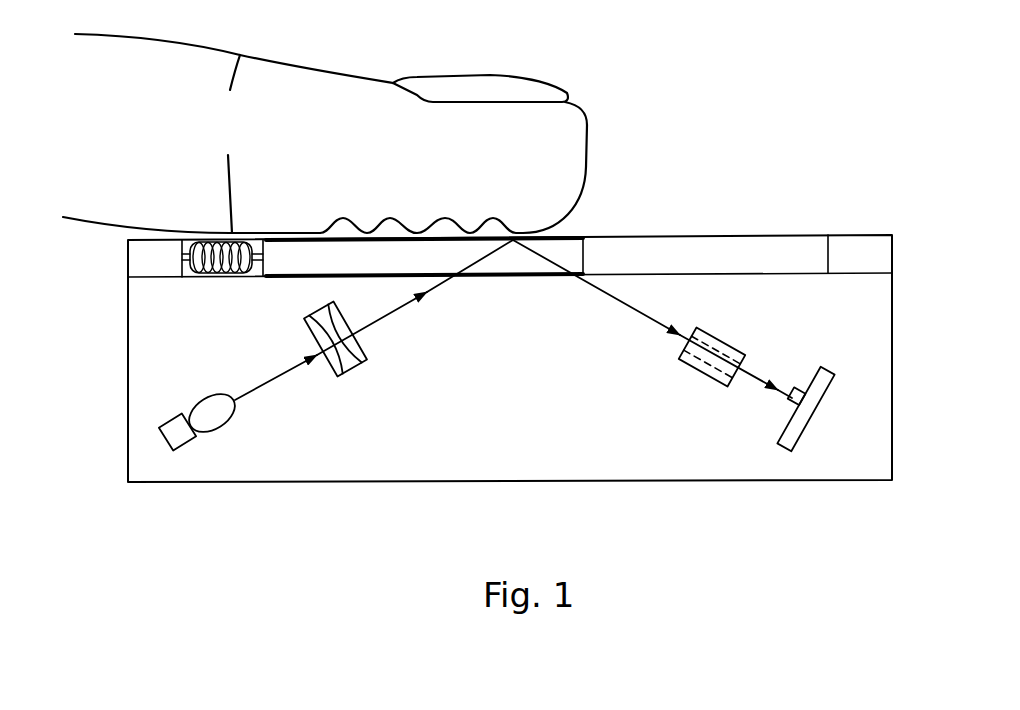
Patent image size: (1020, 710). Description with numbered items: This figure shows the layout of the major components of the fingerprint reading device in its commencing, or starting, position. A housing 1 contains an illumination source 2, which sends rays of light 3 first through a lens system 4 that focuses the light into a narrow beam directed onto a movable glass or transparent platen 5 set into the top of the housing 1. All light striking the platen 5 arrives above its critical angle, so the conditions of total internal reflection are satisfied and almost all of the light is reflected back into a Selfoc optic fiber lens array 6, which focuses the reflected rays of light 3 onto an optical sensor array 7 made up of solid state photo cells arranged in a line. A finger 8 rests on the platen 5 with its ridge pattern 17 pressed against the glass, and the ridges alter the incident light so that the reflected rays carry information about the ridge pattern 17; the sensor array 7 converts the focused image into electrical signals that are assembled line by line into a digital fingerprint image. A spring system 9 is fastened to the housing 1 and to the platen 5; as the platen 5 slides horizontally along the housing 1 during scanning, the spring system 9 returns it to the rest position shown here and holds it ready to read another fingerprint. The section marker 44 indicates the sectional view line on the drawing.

The housing 1 is at (127, 351).
The illumination source 2 is at (214, 433).
The rays of light 3 is at (265, 376).
The lens system 4 is at (354, 378).
The glass or transparent platen 5 is at (584, 236).
The Selfoc optic fiber lens array 6 is at (699, 374).
The optical sensor array 7 is at (781, 413).
The finger 8 is at (588, 119).
The spring system 9 is at (231, 281).
The ridge pattern 17 is at (446, 216).
The section line 44 is at (852, 142).